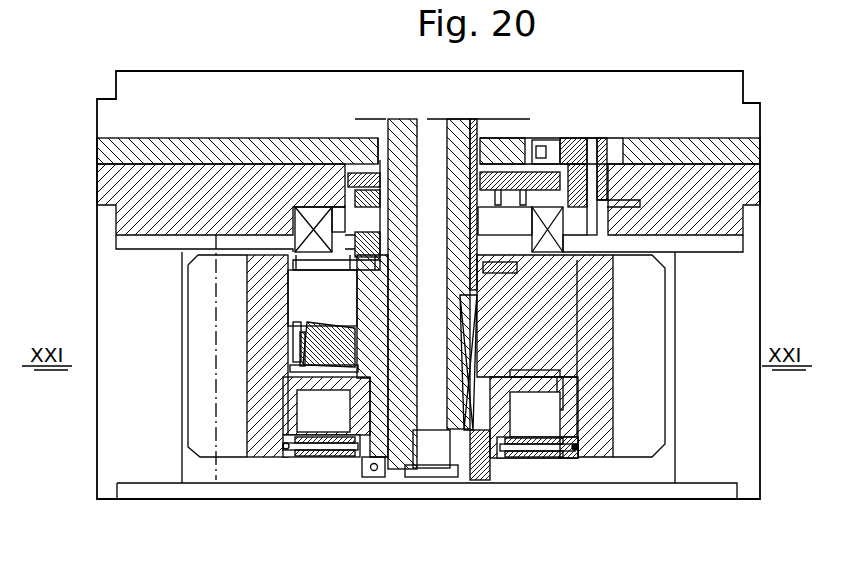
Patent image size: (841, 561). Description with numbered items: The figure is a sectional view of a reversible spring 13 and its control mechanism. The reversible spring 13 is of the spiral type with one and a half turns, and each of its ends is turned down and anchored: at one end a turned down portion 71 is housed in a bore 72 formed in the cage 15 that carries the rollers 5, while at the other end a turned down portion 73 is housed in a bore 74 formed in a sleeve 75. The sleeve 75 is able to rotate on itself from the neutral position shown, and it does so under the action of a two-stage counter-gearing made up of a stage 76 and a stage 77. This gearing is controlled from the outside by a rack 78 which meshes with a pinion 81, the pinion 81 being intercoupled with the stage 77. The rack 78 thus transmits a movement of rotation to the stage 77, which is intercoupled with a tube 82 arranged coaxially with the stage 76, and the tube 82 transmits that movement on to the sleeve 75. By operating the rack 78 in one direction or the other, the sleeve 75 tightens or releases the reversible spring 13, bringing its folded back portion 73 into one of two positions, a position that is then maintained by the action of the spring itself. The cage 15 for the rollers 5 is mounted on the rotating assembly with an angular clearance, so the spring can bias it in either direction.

The rollers 5 is at (327, 453).
The reversible spring 13 is at (292, 366).
The cage 15 is at (358, 413).
The turned down portion 71 is at (563, 458).
The bore 72 is at (560, 384).
The turned down portion 73 is at (293, 358).
The bore 74 is at (298, 330).
The sleeve 75 is at (320, 338).
The stage of two-stage counter-gearing 76 is at (360, 228).
The stage of two-stage counter-gearing 77 is at (523, 178).
The rack 78 is at (566, 150).
The pinion 81 is at (603, 152).
The tube 82 is at (476, 128).